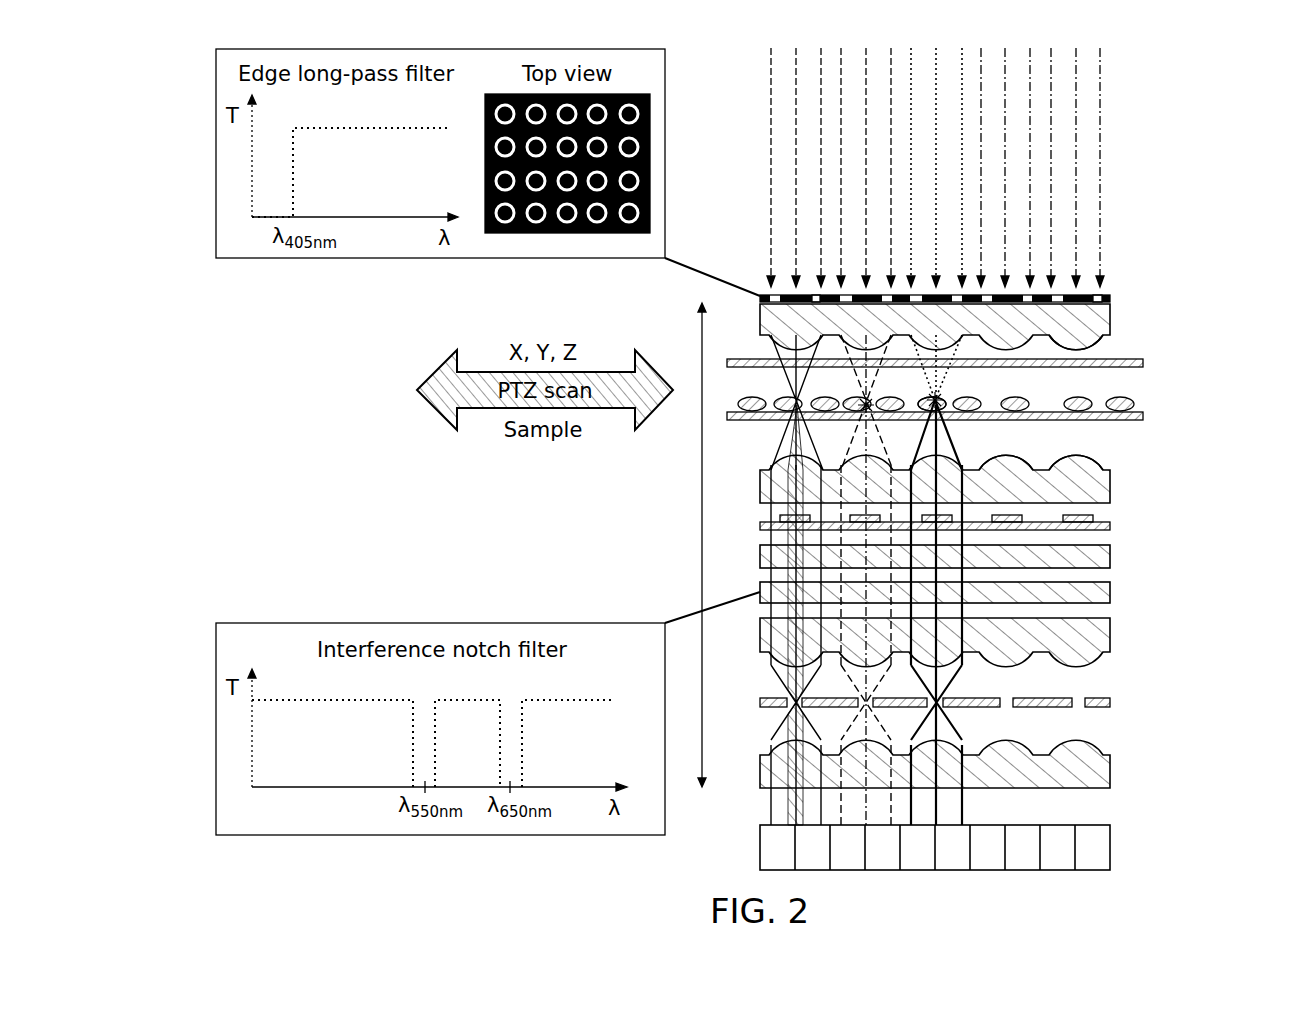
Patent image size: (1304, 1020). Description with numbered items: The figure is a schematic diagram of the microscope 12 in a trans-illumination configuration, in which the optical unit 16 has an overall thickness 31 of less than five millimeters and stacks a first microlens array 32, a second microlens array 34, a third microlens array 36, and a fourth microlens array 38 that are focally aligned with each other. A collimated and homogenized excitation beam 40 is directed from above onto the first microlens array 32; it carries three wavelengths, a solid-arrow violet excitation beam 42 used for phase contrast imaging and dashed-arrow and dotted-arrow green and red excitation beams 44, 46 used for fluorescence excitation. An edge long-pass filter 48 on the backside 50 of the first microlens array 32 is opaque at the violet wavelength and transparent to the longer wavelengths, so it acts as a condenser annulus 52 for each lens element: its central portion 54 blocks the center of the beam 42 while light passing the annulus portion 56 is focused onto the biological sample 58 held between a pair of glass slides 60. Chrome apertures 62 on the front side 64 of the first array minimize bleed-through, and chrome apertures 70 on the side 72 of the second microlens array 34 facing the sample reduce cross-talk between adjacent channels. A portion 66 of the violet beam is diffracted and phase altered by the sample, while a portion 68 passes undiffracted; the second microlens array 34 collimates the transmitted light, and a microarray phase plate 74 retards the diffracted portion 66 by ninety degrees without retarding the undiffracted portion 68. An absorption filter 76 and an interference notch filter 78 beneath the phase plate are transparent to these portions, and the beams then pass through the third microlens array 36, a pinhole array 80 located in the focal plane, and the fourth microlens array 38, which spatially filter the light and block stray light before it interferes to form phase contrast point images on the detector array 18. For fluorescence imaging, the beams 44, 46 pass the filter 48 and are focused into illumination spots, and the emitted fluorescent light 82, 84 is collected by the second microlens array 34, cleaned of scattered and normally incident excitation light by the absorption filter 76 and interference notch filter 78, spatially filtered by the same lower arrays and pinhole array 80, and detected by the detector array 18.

The microscope 12 is at (1203, 209).
The optical unit 16 is at (1152, 445).
The detector array 18 is at (1094, 846).
The overall thickness 31 is at (700, 545).
The first microlens array 32 is at (1108, 326).
The second microlens array 34 is at (1108, 494).
The third microlens array 36 is at (1112, 637).
The fourth microlens array 38 is at (1112, 773).
The collimated and homogenized excitation beam 40 is at (986, 147).
The 405 nm excitation beam 42 is at (771, 43).
The 550 nm excitation beam 44 is at (841, 43).
The 650 nm excitation beam 46 is at (962, 43).
The edge long-pass filter 48 is at (1118, 300).
The backside 50 is at (1099, 296).
The condenser annulus 52 is at (506, 90).
The central portion 54 is at (786, 297).
The annulus portion 56 is at (765, 296).
The biological sample 58 is at (762, 381).
The glass slides 60 is at (1146, 414).
The chrome apertures 62 is at (1106, 348).
The front side 64 is at (1144, 363).
The diffracted beam portion 66 is at (788, 448).
The undiffracted beam portion 68 is at (790, 456).
The chrome apertures 70 is at (1110, 471).
The side of second microlens array 72 is at (1058, 456).
The microarray phase plate 74 is at (1112, 527).
The absorption filter 76 is at (1112, 557).
The interference notch filter 78 is at (1112, 593).
The pinhole array 80 is at (1112, 703).
The fluorescent light 82 is at (926, 403).
The fluorescent light 84 is at (926, 430).